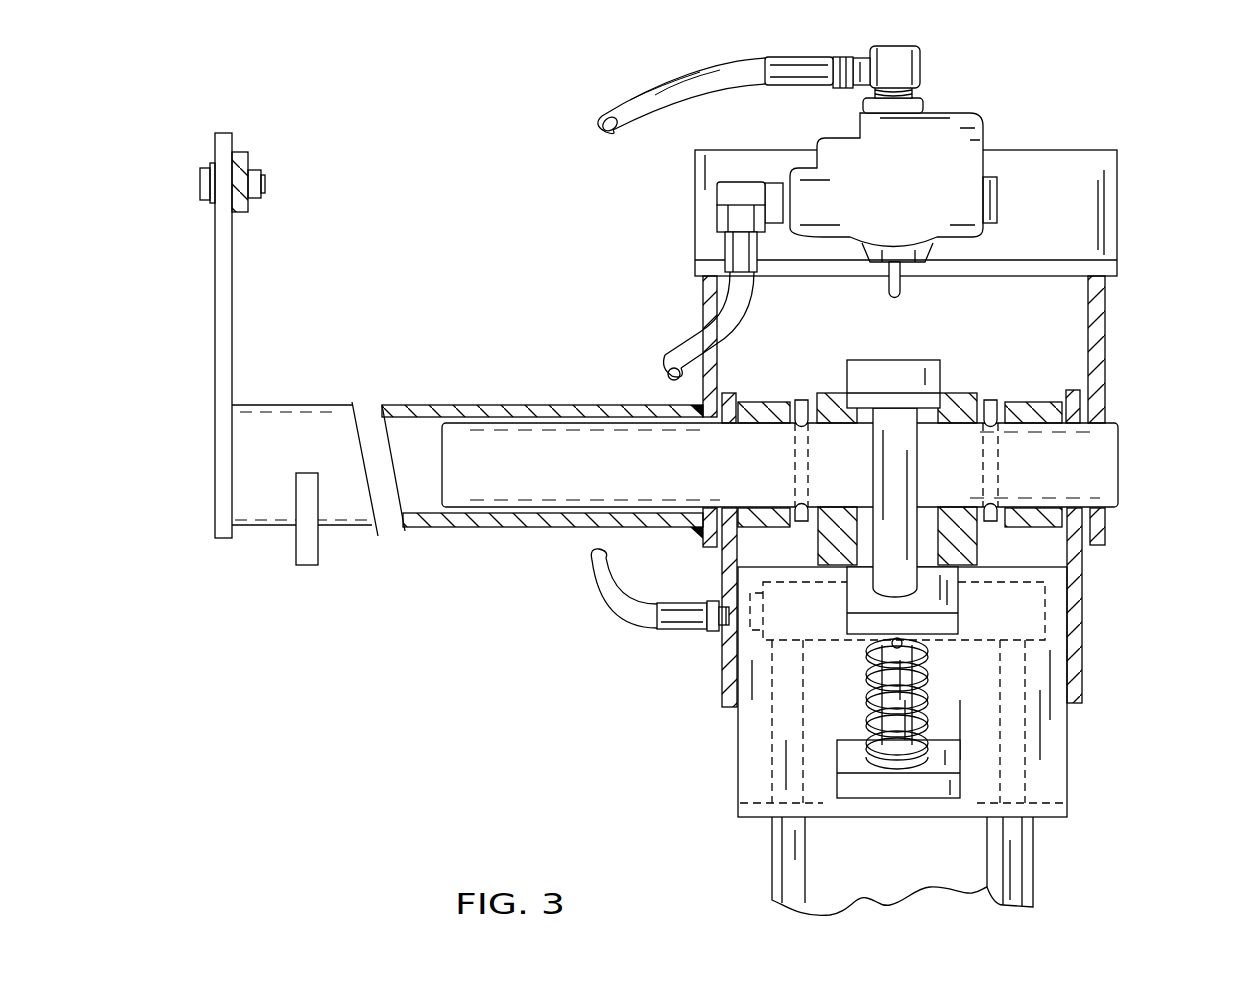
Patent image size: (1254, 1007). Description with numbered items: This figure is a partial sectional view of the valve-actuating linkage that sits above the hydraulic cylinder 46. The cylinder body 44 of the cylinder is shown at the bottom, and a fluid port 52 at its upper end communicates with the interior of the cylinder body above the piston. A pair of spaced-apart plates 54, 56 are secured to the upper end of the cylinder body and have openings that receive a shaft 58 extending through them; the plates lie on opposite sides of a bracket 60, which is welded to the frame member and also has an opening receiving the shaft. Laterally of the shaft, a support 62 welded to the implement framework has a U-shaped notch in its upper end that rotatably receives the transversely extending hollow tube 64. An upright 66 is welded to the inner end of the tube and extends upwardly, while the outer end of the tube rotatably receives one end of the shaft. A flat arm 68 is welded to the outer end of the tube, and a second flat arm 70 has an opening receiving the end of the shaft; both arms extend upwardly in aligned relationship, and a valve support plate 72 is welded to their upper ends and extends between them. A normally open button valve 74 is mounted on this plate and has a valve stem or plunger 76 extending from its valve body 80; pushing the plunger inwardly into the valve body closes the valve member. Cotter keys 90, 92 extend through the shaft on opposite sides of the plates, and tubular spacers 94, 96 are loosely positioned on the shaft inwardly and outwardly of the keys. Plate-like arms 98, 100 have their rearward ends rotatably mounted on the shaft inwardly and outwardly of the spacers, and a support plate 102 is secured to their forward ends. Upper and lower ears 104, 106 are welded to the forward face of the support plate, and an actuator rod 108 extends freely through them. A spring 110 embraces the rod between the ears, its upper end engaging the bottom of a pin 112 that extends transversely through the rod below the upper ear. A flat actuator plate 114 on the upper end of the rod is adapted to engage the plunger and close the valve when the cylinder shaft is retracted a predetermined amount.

The cylinder body 44 is at (912, 868).
The hydraulic cylinder 46 is at (1040, 862).
The fluid port 52 is at (724, 637).
The plate 54 is at (833, 398).
The plate 56 is at (957, 400).
The shaft 58 is at (555, 482).
The bracket 60 is at (927, 545).
The support 62 is at (318, 542).
The hollow tube 64 is at (418, 408).
The upright 66 is at (232, 288).
The flat arm 68 is at (703, 296).
The flat arm 70 is at (1095, 333).
The valve support plate 72 is at (1072, 220).
The button valve 74 is at (985, 112).
The valve stem or plunger 76 is at (903, 290).
The valve body 80 is at (900, 200).
The cotter key 90 is at (803, 400).
The cotter key 92 is at (992, 402).
The tubular spacer 94 is at (765, 522).
The tubular spacer 96 is at (1033, 523).
The plate-like arm 98 is at (728, 680).
The plate-like arm 100 is at (1078, 633).
The support plate 102 is at (1058, 780).
The upper ear or bracket 104 is at (943, 600).
The lower ear or bracket 106 is at (850, 758).
The actuator rod 108 is at (895, 453).
The spring 110 is at (920, 663).
The pin 112 is at (902, 646).
The actuator plate 114 is at (900, 373).